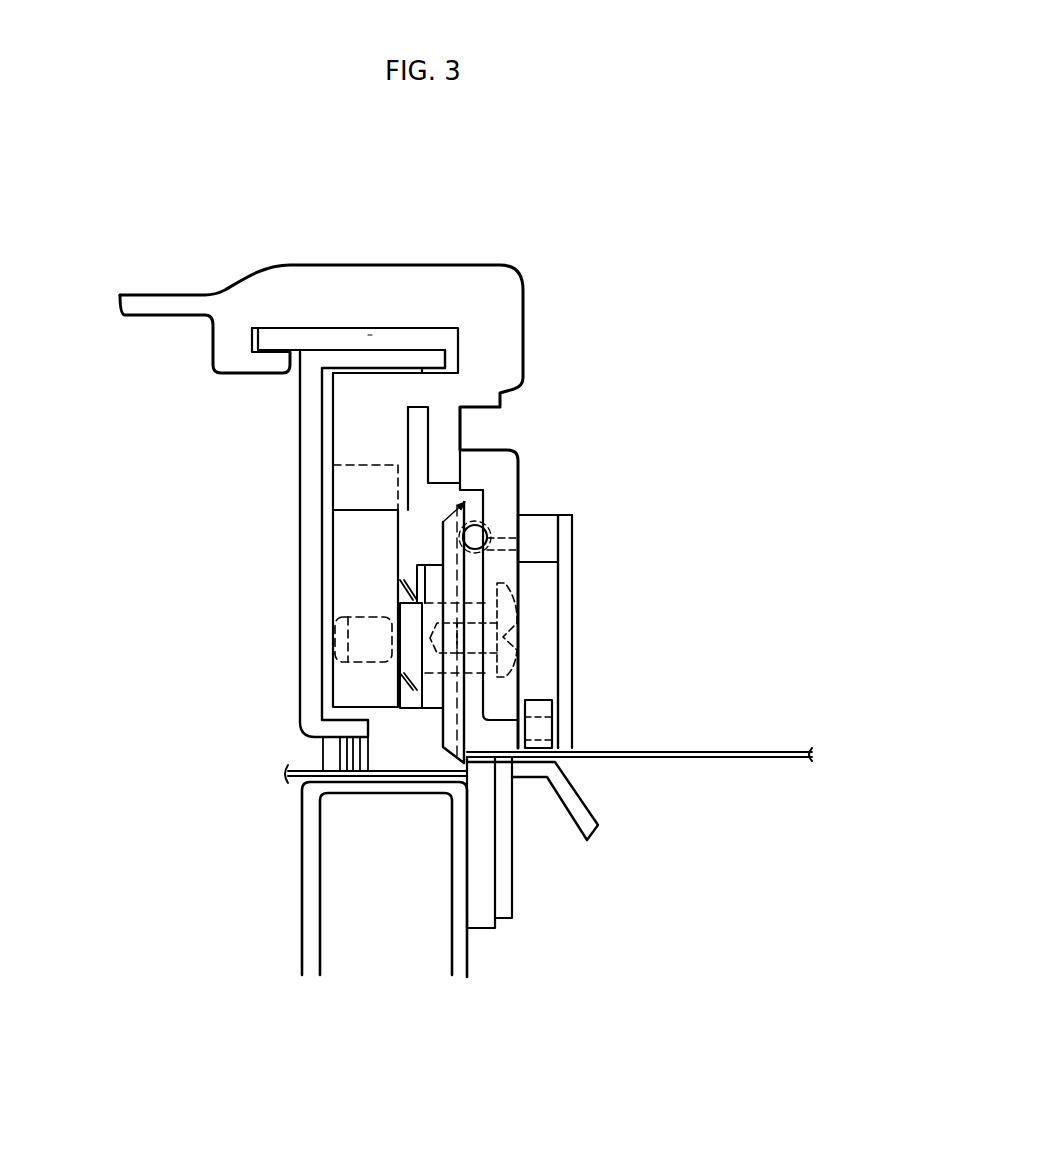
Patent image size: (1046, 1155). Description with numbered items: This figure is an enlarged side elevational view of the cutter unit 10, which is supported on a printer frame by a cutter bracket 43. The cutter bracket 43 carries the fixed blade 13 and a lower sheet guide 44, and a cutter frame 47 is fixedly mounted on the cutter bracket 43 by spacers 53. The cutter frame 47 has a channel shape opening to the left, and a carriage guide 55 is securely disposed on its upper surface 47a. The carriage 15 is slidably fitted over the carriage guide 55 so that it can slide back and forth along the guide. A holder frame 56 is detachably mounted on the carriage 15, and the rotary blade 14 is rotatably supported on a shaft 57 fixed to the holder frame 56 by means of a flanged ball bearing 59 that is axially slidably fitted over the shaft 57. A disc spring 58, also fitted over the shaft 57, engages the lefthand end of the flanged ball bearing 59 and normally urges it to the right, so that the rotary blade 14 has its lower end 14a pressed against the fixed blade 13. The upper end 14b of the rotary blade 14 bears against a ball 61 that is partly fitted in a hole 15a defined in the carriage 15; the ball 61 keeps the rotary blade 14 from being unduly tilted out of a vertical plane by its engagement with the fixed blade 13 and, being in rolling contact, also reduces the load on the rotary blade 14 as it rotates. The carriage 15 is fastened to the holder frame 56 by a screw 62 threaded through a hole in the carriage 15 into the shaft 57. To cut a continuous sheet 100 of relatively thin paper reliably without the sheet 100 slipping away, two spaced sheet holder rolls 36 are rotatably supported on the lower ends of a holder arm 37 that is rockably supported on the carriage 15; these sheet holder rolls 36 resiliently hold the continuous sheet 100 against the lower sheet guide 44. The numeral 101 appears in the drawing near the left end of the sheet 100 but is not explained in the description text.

The cutter unit 10 is at (653, 425).
The fixed blade 13 is at (482, 848).
The rotary blade 14 is at (450, 723).
The lower end 14a is at (467, 765).
The upper end 14b is at (483, 520).
The carriage 15 is at (512, 333).
The hole 15a is at (487, 533).
The sheet holder rolls 36 is at (543, 708).
The holder arm 37 is at (557, 600).
The cutter bracket 43 is at (310, 866).
The lower sheet guide 44 is at (573, 800).
The cutter frame 47 is at (305, 578).
The upper surface 47a is at (352, 350).
The spacers 53 is at (330, 750).
The carriage guide 55 is at (368, 335).
The holder frame 56 is at (348, 548).
The shaft 57 is at (400, 612).
The disc spring 58 is at (400, 683).
The flanged ball bearing 59 is at (418, 563).
The ball 61 is at (485, 548).
The screw 62 is at (517, 643).
The continuous sheet 100 is at (727, 752).
The plate end portion 101 is at (290, 780).